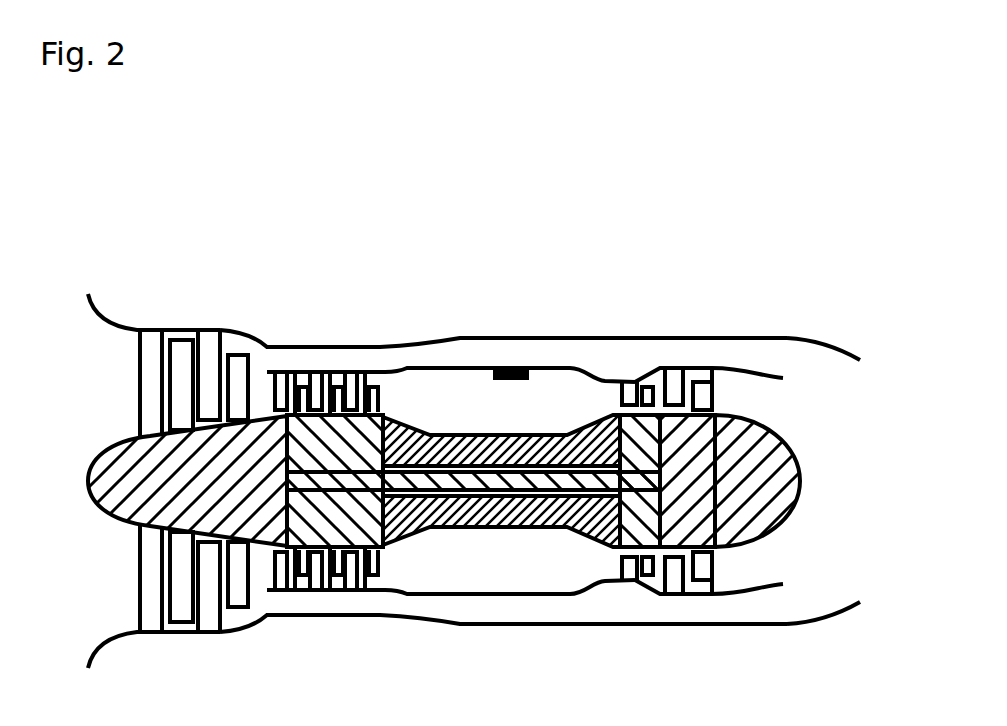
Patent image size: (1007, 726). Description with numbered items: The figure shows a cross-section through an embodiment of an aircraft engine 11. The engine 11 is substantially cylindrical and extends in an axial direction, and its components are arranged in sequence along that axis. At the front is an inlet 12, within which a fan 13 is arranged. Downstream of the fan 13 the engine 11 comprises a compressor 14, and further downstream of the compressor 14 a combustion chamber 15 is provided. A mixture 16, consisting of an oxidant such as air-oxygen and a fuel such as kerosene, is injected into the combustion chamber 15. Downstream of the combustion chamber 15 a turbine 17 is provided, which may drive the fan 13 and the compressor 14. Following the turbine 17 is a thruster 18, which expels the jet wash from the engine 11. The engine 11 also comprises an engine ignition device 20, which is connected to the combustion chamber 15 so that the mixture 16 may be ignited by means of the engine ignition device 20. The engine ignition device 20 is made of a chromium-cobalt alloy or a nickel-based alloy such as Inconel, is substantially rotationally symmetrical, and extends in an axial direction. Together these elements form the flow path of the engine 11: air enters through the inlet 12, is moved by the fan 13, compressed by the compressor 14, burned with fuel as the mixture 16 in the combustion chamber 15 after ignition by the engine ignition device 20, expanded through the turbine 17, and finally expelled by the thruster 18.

The engine 11 is at (226, 214).
The inlet 12 is at (85, 353).
The fan 13 is at (181, 365).
The compressor 14 is at (333, 362).
The combustion chamber 15 is at (427, 395).
The mixture 16 is at (568, 395).
The turbine 17 is at (693, 360).
The thruster 18 is at (820, 375).
The engine ignition device 20 is at (512, 380).